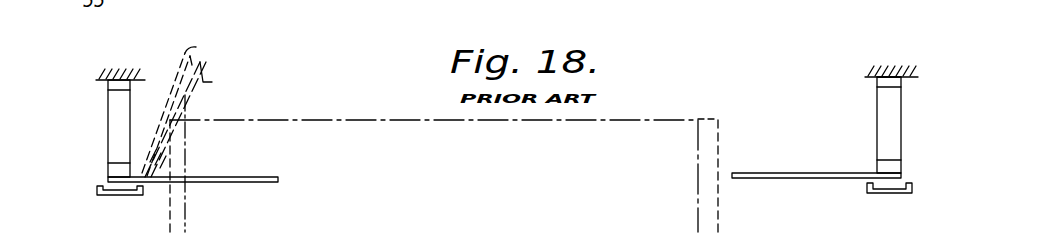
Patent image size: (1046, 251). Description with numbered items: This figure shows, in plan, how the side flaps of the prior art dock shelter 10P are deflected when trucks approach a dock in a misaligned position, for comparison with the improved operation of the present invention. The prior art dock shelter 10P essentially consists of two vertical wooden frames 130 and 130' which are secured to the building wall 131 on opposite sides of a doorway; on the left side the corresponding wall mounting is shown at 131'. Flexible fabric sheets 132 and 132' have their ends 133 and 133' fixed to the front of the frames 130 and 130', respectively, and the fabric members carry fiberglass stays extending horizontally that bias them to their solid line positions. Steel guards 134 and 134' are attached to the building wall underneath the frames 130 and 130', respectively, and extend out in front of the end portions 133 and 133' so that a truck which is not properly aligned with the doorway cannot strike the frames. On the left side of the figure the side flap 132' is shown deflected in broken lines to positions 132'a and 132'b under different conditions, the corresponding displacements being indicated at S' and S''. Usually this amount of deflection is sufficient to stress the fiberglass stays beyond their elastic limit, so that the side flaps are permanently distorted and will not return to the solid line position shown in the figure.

The prior art dock shelter 10P is at (926, 64).
The vertical wooden frame 130 is at (919, 125).
The building wall 131 is at (915, 92).
The flexible fabric sheet 132 is at (816, 197).
The end of fabric sheet 133 is at (922, 166).
The steel guard 134 is at (917, 205).
The vertical wooden frame 130' is at (87, 128).
The post upper mounting 131' is at (95, 87).
The flexible fabric sheet 132' is at (218, 203).
The deflected position of side flap 132'a is at (218, 119).
The deflected position of side flap 132'b is at (207, 104).
The end of fabric sheet 133' is at (88, 172).
The steel guard 134' is at (100, 210).
The spacing S' is at (209, 168).
The spacing S'' is at (146, 182).